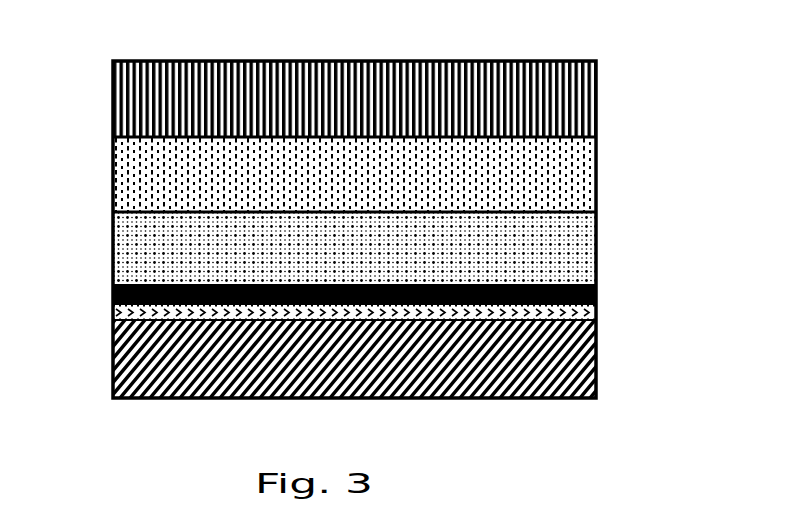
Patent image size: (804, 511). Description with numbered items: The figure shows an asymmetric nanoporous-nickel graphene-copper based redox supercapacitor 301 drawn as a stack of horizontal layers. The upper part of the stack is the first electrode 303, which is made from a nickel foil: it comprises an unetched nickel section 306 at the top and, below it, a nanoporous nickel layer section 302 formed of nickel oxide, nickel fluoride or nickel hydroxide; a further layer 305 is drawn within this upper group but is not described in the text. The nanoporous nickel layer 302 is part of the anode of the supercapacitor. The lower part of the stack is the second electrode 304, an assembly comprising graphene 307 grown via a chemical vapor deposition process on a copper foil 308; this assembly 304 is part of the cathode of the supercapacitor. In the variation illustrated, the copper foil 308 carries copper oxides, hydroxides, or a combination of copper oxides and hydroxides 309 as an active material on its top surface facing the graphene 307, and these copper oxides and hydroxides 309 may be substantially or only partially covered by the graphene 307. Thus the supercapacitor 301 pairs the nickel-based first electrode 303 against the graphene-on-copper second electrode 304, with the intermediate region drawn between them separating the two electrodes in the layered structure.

The asymmetric redox supercapacitor 301 is at (388, 36).
The nanoporous nickel layer section 302 is at (596, 148).
The first electrode 303 is at (108, 63).
The second electrode 304 is at (108, 284).
The dashed-pattern layer 305 is at (596, 188).
The unetched nickel section 306 is at (596, 109).
The graphene 307 is at (596, 297).
The copper foil 308 is at (596, 357).
The copper oxides and hydroxides 309 is at (596, 313).